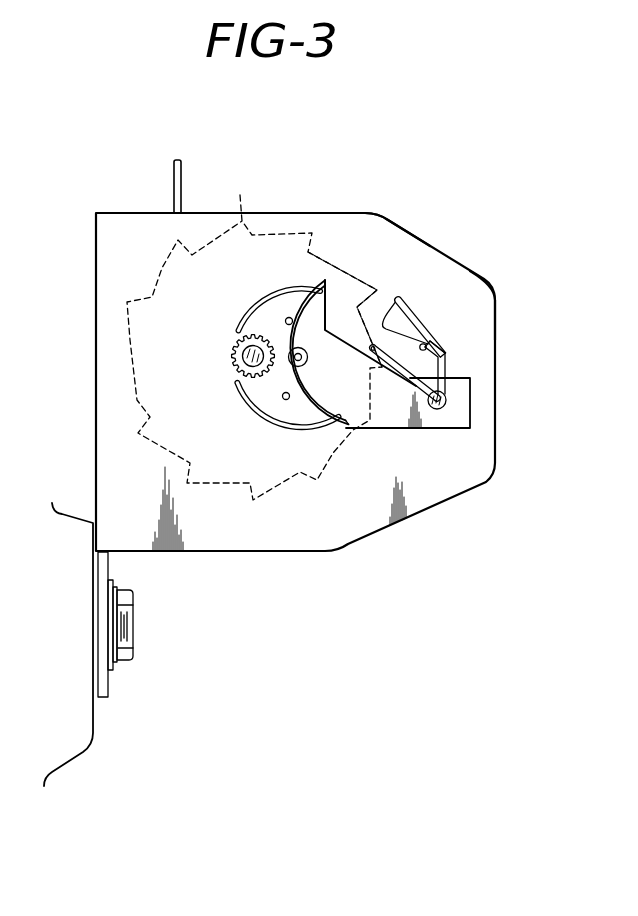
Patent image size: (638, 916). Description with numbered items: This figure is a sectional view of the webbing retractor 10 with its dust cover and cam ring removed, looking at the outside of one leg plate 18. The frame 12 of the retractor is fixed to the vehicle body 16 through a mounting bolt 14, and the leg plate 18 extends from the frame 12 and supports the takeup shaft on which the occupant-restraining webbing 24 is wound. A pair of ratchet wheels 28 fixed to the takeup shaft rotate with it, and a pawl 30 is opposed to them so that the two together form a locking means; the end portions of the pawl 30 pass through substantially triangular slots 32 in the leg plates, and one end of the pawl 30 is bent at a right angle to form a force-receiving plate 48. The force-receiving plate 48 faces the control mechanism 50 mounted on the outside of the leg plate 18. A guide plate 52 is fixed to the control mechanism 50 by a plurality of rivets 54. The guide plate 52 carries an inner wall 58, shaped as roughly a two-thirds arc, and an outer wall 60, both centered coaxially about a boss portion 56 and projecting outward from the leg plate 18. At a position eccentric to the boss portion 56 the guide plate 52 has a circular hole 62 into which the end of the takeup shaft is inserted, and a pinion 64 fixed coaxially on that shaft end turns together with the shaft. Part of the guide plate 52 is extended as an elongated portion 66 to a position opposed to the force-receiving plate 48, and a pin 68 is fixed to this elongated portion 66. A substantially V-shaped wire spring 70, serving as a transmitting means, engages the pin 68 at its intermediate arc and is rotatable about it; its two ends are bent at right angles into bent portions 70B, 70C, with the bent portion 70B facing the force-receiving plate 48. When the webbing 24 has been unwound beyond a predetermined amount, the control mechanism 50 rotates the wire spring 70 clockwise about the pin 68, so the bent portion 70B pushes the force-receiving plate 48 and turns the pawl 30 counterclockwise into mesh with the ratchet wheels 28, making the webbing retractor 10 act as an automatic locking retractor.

The webbing retractor 10 is at (434, 233).
The frame 12 is at (108, 566).
The mounting bolt 14 is at (133, 628).
The vehicle body 16 is at (96, 644).
The leg plate 18 is at (474, 282).
The occupant-restraining webbing 24 is at (181, 178).
The ratchet wheels 28 is at (240, 197).
The pawl 30 is at (385, 288).
The triangular slots 32 is at (410, 313).
The force-receiving plate 48 is at (427, 338).
The control mechanism 50 is at (377, 232).
The guide plate 52 is at (292, 301).
The rivets 54 is at (293, 321).
The boss portion 56 is at (309, 359).
The inner wall 58 is at (254, 415).
The outer wall 60 is at (332, 440).
The circular hole 62 is at (252, 357).
The pinion 64 is at (235, 347).
The elongated portion 66 is at (467, 408).
The pin 68 is at (441, 410).
The wire spring 70 is at (441, 372).
The bent portion 70B is at (446, 349).
The bent portion 70C is at (370, 353).